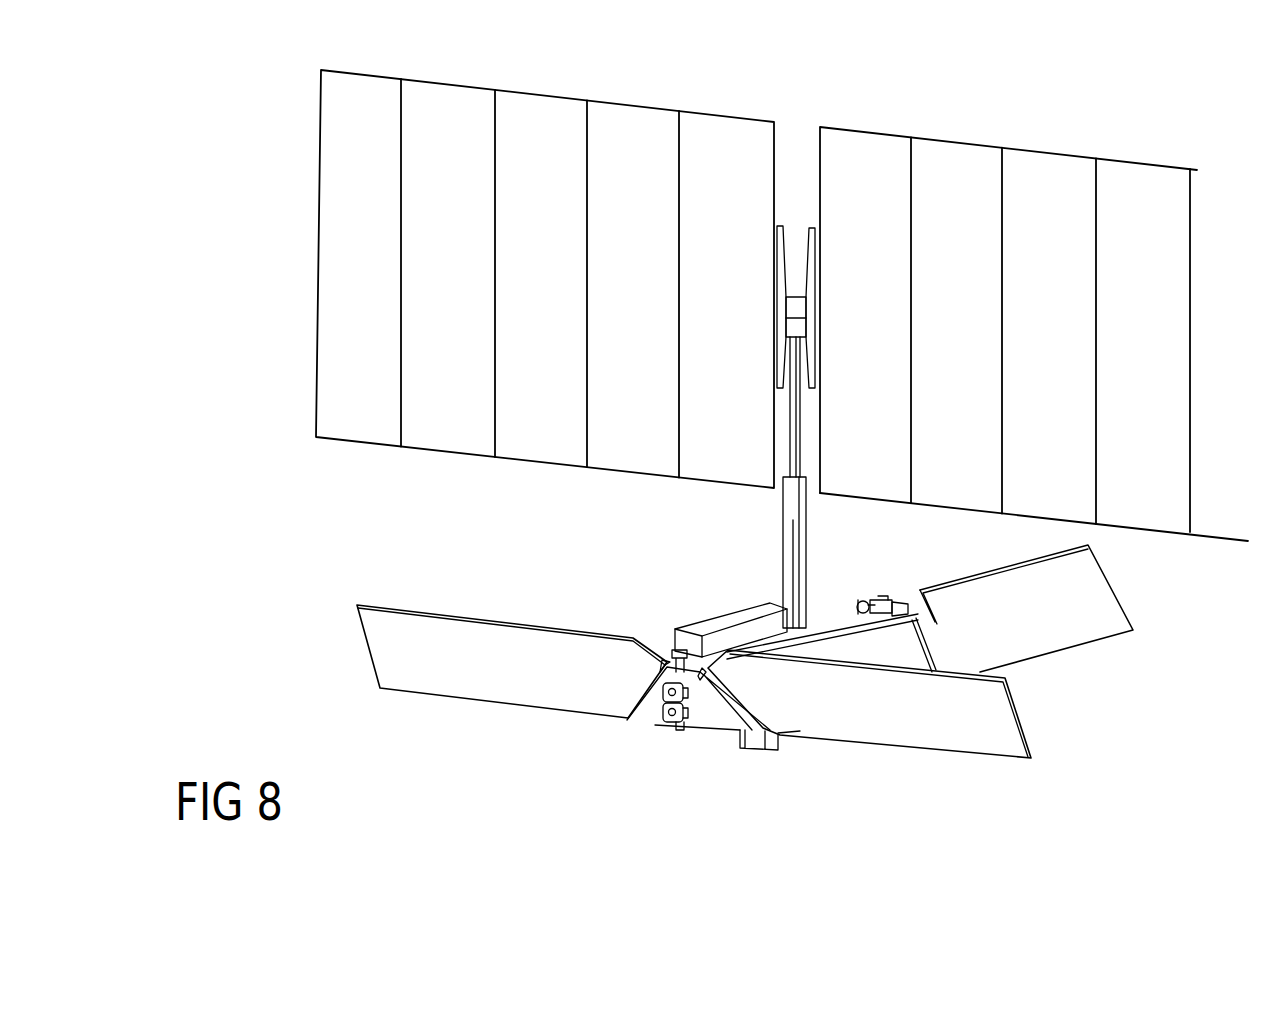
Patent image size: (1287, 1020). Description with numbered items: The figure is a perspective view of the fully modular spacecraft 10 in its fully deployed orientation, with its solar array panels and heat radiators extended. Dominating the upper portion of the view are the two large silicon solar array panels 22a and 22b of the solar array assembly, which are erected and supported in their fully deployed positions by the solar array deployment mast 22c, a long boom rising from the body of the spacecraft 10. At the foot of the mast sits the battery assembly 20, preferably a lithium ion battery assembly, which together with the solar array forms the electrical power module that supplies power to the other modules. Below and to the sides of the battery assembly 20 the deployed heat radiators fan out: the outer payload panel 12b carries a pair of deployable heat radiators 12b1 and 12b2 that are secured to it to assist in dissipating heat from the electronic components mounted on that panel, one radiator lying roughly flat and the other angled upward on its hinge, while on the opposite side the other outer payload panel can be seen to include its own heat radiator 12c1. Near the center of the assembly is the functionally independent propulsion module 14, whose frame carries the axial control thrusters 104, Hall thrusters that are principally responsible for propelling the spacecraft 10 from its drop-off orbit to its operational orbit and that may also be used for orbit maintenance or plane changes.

The spacecraft 10 is at (256, 419).
The solar array panel 22b is at (448, 435).
The solar array panel 22a is at (1167, 513).
The solar array deployment mast 22c is at (793, 557).
The battery assembly 20 is at (722, 635).
The heat radiator 12c1 is at (385, 642).
The outer payload panel 12b is at (938, 670).
The deployable heat radiator 12b1 is at (985, 712).
The deployable heat radiator 12b2 is at (1087, 622).
The propulsion module 14 is at (675, 728).
The axial control thrusters 104 is at (687, 692).